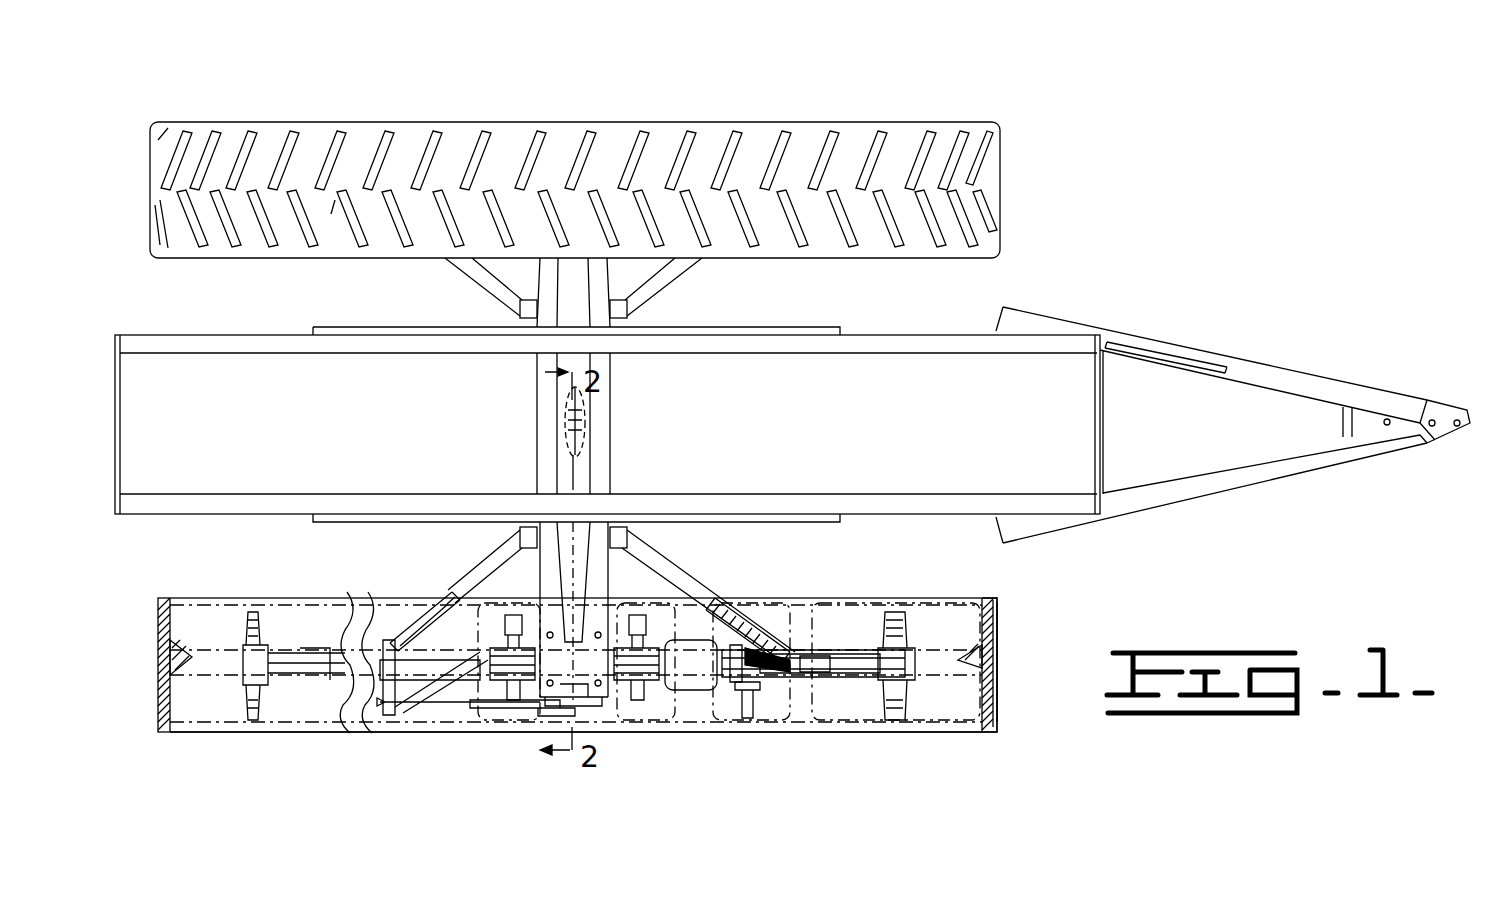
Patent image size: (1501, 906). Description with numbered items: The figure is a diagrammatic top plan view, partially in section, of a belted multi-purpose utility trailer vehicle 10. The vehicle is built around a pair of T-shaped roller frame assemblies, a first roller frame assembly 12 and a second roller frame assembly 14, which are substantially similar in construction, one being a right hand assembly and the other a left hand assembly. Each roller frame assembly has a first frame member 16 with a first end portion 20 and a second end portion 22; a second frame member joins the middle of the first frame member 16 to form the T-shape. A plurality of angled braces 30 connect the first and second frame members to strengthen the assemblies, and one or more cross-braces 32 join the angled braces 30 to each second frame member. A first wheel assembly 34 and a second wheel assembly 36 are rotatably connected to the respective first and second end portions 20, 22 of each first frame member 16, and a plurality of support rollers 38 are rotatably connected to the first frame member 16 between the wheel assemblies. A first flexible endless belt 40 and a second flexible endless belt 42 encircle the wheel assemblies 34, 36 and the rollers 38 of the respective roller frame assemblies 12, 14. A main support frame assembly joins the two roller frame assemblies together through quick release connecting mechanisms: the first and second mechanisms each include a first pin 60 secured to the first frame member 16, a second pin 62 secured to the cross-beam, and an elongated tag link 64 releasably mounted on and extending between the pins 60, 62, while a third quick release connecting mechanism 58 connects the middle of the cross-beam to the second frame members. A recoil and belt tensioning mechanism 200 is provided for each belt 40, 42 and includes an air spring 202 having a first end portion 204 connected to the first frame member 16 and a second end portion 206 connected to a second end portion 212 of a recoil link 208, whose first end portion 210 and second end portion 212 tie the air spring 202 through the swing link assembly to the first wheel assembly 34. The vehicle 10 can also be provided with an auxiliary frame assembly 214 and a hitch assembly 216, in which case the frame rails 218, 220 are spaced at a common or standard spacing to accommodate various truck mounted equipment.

The belted multi-purpose utility trailer vehicle 10 is at (798, 102).
The second flexible endless belt 42 is at (466, 128).
The second roller frame assembly 14 is at (335, 200).
The angled braces 30 is at (478, 282).
The cross-braces 32 is at (525, 320).
The third quick release connecting mechanism 58 is at (562, 413).
The frame rail 218 is at (1000, 352).
The frame rail 220 is at (1010, 493).
The auxiliary frame assembly 214 is at (943, 334).
The hitch assembly 216 is at (1357, 478).
The second wheel assembly 36 is at (186, 602).
The first wheel assembly 34 is at (963, 732).
The first flexible endless belt 40 is at (992, 614).
The second end portion of first frame member 22 is at (312, 658).
The first pin 60 is at (390, 720).
The first frame member 16 is at (440, 657).
The support rollers 38 is at (478, 735).
The second pin 62 is at (592, 742).
The tag link 64 is at (557, 718).
The air spring 202 is at (691, 665).
The first roller frame assembly 12 is at (805, 640).
The second end portion of recoil link 212 is at (800, 655).
The first end portion of recoil link 210 is at (900, 650).
The first end portion of air spring 204 is at (688, 560).
The second end portion of air spring 206 is at (760, 650).
The recoil and belt tensioning mechanism 200 is at (736, 681).
The first end portion of first frame member 20 is at (830, 665).
The recoil link 208 is at (845, 668).